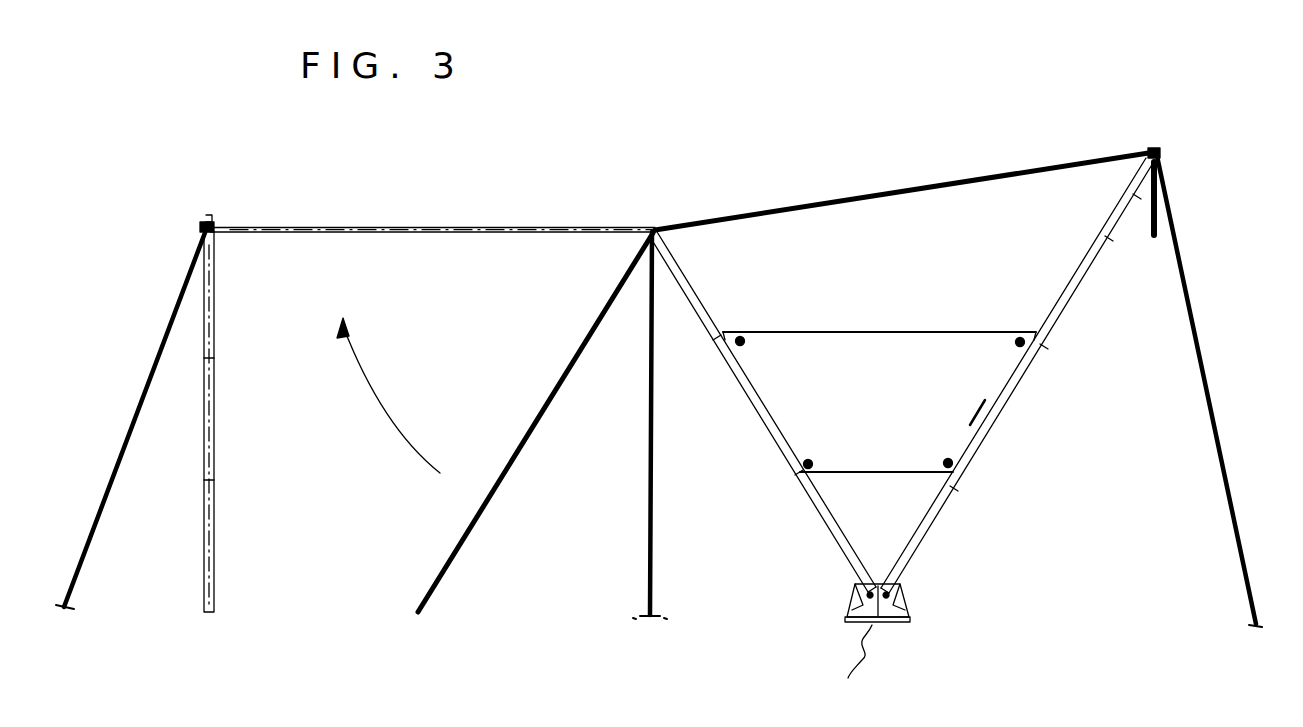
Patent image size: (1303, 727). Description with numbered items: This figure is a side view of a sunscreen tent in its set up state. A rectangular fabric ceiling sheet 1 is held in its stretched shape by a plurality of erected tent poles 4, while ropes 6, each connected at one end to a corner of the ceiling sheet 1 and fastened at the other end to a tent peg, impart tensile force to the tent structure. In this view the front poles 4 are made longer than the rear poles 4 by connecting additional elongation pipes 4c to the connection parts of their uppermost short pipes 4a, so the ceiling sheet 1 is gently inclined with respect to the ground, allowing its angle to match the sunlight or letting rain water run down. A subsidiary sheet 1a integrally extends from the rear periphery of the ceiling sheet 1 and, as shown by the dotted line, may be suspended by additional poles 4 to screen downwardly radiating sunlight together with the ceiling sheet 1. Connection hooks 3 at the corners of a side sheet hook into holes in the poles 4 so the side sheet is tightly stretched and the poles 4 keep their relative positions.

The ceiling sheet 1 is at (946, 185).
The subsidiary sheet 1a is at (487, 229).
The connection hooks 3 is at (915, 360).
The tent poles 4 is at (203, 555).
The uppermost short pipes 4a is at (1075, 290).
The elongation pipes 4c is at (1130, 197).
The ropes 6 is at (110, 460).